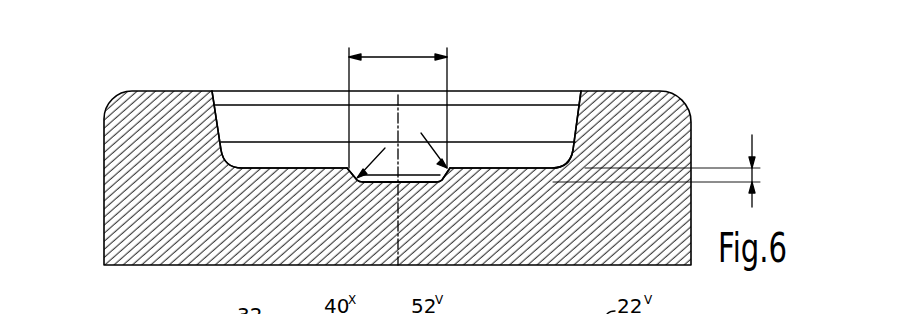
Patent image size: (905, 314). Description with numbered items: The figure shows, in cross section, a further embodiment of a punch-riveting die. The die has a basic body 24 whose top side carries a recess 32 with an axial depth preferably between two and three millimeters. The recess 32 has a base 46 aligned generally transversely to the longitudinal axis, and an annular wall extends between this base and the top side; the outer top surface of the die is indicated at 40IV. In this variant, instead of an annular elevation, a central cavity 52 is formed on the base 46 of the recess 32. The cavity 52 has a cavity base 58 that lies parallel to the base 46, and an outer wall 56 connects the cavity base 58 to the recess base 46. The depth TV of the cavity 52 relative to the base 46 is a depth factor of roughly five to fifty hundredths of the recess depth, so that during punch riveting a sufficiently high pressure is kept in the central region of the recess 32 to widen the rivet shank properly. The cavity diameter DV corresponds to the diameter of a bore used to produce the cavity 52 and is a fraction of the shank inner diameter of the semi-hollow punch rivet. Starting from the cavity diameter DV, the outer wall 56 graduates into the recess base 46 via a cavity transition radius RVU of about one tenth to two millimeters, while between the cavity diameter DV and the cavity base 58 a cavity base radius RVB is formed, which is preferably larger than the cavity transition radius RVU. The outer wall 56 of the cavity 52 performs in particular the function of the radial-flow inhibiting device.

The basic body 24 is at (180, 218).
The recess 32 is at (270, 125).
The base 46 is at (271, 163).
The cavity 52 is at (408, 178).
The outer wall 56 is at (433, 147).
The cavity base 58 is at (389, 172).
The outer surface 40IV is at (532, 91).
The cavity diameter DV is at (407, 53).
The depth of the cavity TV is at (755, 144).
The cavity base radius RVB is at (376, 180).
The cavity transition radius RVU is at (426, 143).